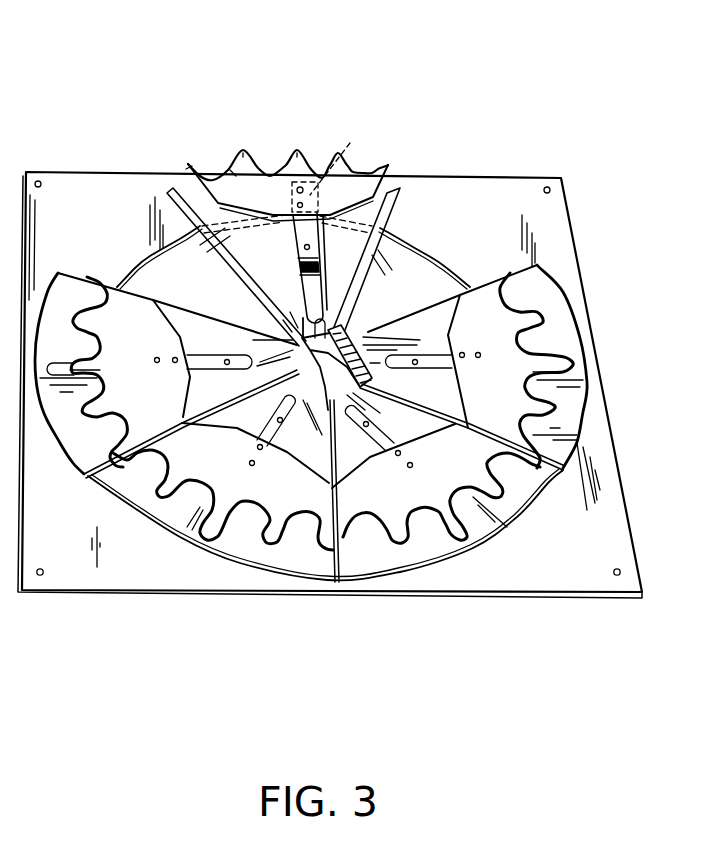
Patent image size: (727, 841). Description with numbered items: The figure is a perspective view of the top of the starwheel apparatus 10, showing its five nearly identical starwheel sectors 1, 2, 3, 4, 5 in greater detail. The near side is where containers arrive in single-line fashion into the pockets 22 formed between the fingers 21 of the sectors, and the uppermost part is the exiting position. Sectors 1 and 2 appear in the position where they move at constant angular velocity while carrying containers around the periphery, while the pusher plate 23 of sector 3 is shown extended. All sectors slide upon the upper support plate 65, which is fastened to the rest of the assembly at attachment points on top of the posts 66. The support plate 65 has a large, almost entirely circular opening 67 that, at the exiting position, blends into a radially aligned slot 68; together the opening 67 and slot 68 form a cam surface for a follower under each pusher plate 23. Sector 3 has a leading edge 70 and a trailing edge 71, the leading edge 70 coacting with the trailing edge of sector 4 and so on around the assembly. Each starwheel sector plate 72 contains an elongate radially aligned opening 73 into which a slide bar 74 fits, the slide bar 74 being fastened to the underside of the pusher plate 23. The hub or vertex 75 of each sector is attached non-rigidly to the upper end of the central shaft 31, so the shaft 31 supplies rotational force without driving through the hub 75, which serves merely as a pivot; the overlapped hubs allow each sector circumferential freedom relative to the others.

The starwheel apparatus 10 is at (427, 150).
The starwheel sector 1 is at (305, 453).
The starwheel sector 2 is at (196, 356).
The starwheel sector 3 is at (338, 268).
The starwheel sector 4 is at (423, 400).
The starwheel sector 5 is at (339, 451).
The fingers 21 is at (337, 157).
The starwheel pockets 22 is at (222, 173).
The pusher plate 23 is at (248, 204).
The central spindle or shaft 31 is at (316, 313).
The upper support plate 65 is at (97, 235).
The posts 66 is at (38, 181).
The opening 67 is at (154, 250).
The radially aligned slot 68 is at (345, 140).
The leading edge 70 is at (373, 262).
The trailing edge 71 is at (223, 263).
The starwheel sector plate 72 is at (345, 238).
The elongate radially aligned opening 73 is at (298, 268).
The slide bar 74 is at (302, 247).
The hub or vertex 75 is at (343, 333).